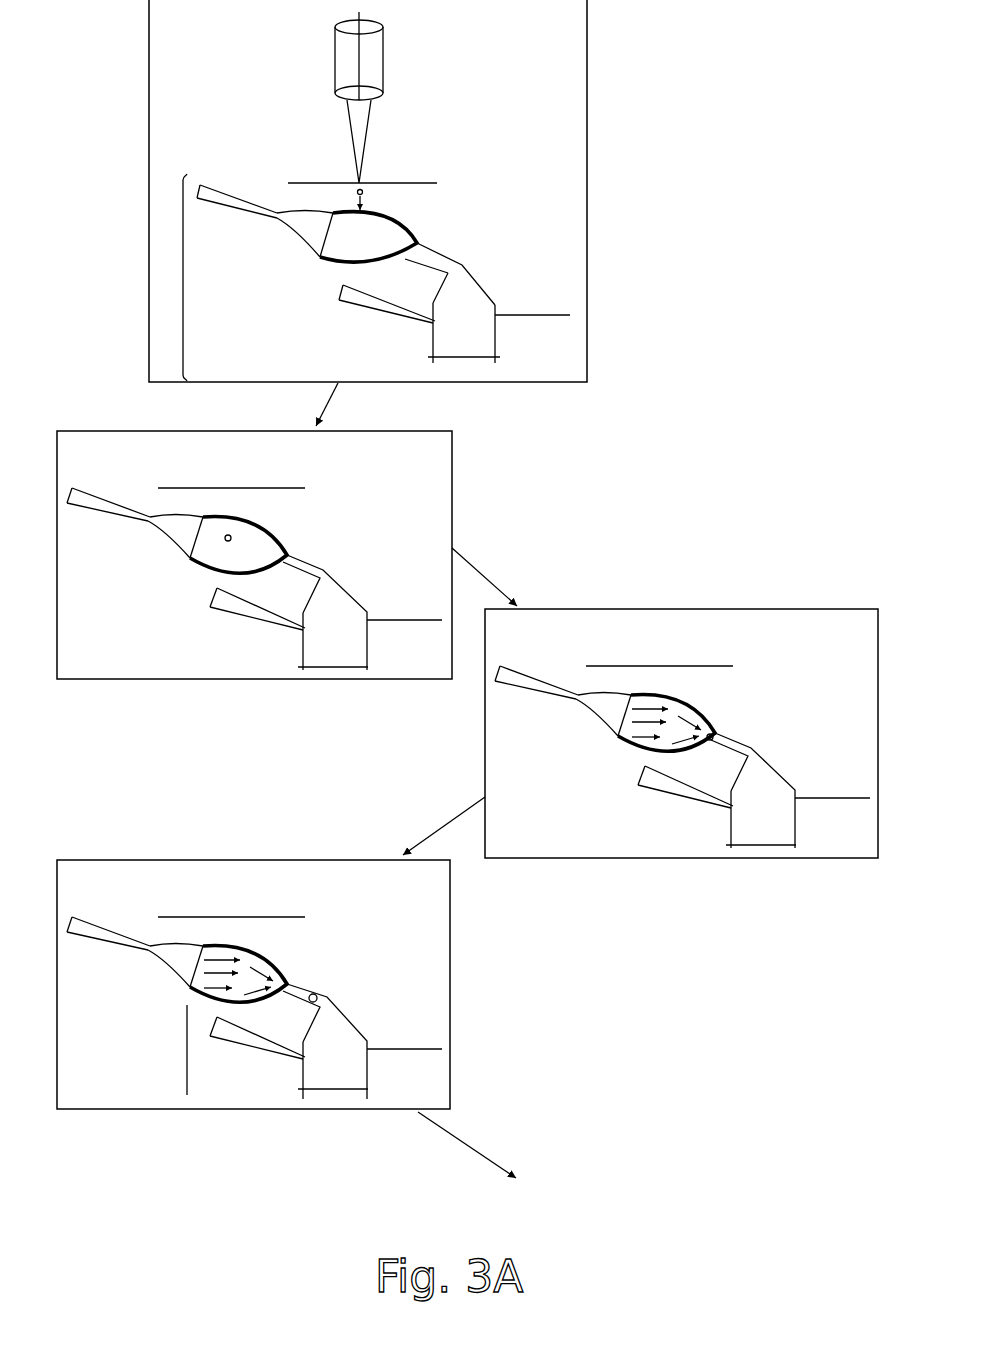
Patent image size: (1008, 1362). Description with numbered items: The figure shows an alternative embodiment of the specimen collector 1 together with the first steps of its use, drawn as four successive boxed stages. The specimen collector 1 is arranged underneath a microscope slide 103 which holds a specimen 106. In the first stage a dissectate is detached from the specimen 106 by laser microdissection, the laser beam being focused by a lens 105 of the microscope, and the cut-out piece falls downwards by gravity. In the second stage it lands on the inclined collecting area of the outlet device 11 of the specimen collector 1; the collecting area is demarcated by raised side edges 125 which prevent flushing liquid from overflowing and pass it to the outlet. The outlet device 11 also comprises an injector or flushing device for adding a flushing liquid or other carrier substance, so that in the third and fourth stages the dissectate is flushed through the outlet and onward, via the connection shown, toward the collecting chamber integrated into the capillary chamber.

The specimen collector 1 is at (175, 277).
The outlet device 11 is at (324, 264).
The microscope slide 103 is at (302, 182).
The lens 105 is at (380, 68).
The specimen 106 is at (367, 181).
The side edges 125 is at (372, 268).